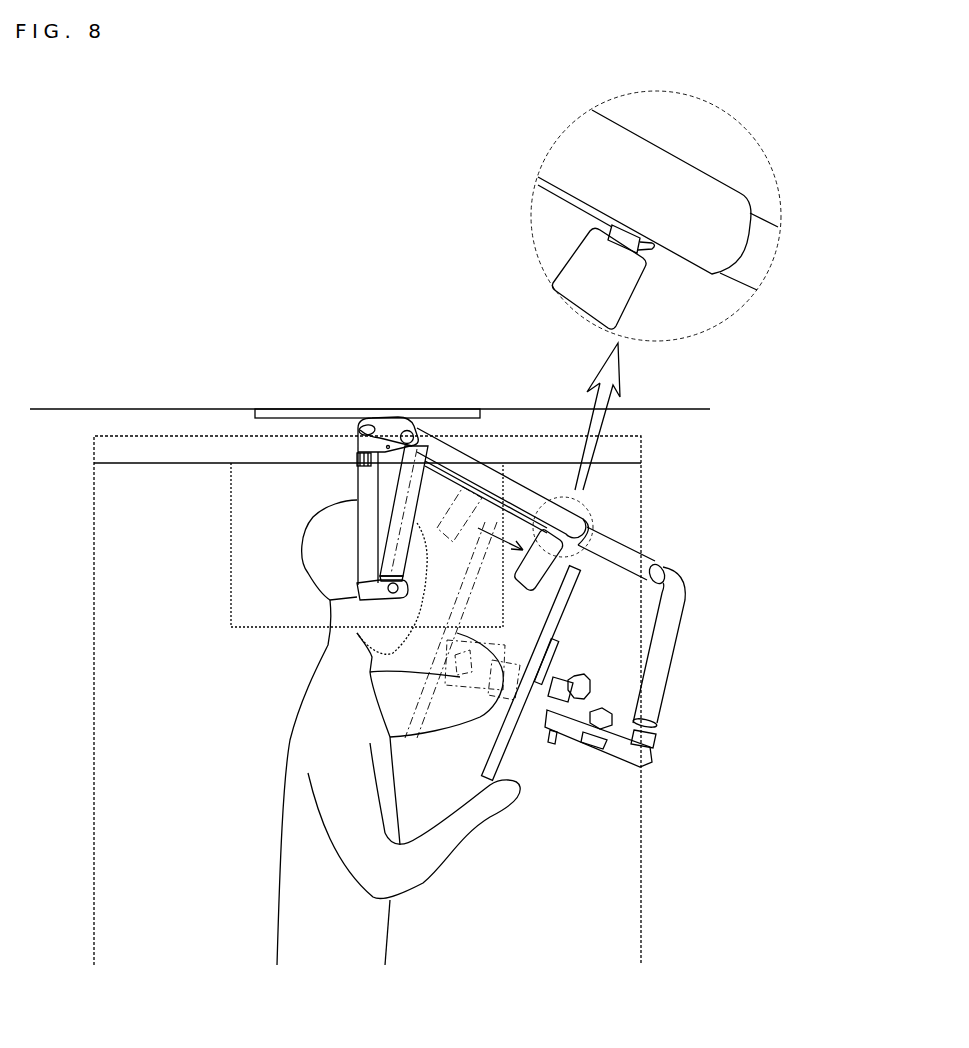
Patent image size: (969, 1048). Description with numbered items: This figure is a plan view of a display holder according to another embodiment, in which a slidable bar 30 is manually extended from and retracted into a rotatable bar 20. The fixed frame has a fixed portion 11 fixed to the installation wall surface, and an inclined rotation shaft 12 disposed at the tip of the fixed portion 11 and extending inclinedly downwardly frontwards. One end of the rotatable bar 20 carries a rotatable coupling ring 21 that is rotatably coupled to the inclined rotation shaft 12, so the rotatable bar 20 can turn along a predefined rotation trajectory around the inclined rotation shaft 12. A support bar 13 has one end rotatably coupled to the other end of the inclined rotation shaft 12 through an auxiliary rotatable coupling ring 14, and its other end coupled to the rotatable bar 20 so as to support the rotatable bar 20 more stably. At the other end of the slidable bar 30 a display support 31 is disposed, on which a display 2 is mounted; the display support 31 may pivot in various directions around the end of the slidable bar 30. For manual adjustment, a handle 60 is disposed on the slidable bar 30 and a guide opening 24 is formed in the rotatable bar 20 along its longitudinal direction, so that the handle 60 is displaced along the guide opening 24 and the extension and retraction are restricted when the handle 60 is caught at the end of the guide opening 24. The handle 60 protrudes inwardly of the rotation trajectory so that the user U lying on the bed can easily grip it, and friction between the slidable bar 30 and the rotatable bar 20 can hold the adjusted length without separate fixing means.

The fixed portion 11 is at (304, 412).
The inclined rotation shaft 12 is at (360, 483).
The support bar 13 is at (423, 482).
The auxiliary rotatable coupling ring 14 is at (330, 603).
The rotatable bar 20 is at (518, 487).
The rotatable coupling ring 21 is at (368, 423).
The guide opening 24 is at (573, 202).
The slidable bar 30 is at (667, 648).
The display support 31 is at (527, 740).
The handle 60 is at (573, 260).
The display 2 is at (507, 748).
The user U is at (283, 768).